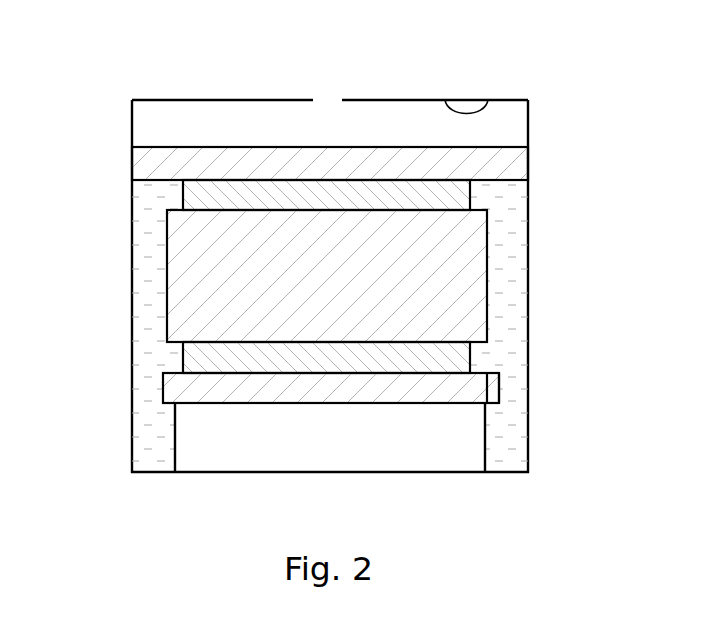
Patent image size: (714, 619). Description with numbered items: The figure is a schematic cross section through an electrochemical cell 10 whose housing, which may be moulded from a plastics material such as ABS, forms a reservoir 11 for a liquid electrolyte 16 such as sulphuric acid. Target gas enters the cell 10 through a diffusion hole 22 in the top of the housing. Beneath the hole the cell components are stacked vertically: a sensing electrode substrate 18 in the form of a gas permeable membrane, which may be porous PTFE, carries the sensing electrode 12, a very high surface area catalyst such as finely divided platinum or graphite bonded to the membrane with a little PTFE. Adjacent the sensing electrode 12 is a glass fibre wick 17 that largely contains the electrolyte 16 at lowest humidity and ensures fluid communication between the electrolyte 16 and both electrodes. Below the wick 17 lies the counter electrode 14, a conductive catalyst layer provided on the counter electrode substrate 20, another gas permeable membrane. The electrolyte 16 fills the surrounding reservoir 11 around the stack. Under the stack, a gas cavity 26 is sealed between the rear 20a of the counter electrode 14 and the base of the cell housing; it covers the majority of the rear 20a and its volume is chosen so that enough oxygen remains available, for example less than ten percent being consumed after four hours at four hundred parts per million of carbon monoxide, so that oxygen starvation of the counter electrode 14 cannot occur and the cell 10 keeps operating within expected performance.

The electrochemical cell 10 is at (178, 84).
The diffusion hole 22 is at (328, 93).
The reservoir 11 is at (488, 100).
The sensing electrode substrate 18 is at (132, 163).
The sensing electrode 12 is at (183, 190).
The wick 17 is at (167, 277).
The counter electrode 14 is at (183, 355).
The counter electrode substrate 20 is at (163, 388).
The rear of the counter electrode 20a is at (463, 403).
The liquid electrolyte 16 is at (507, 290).
The gas cavity 26 is at (340, 442).